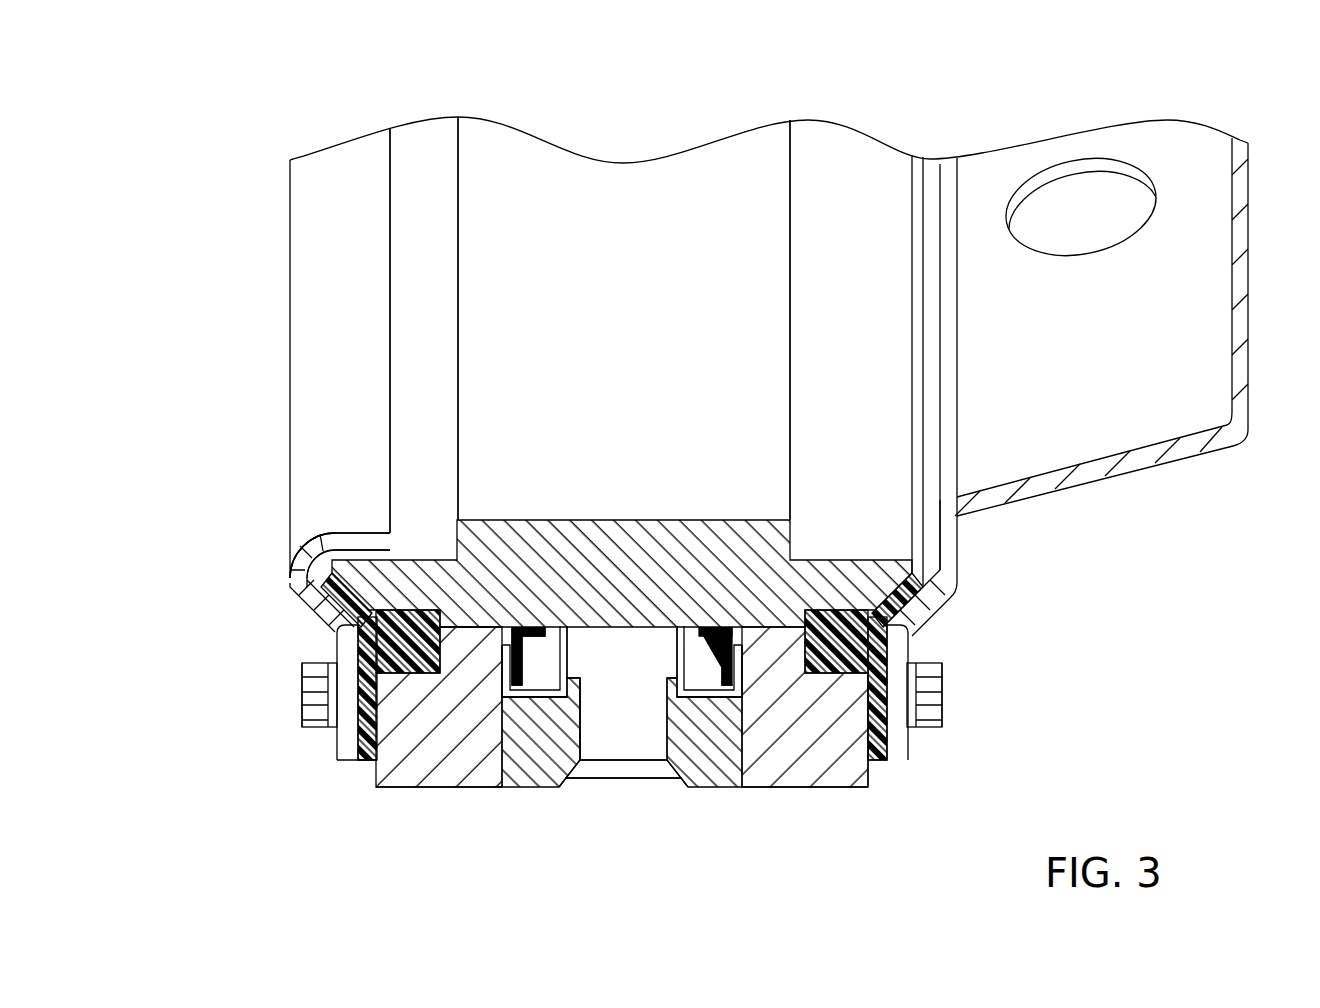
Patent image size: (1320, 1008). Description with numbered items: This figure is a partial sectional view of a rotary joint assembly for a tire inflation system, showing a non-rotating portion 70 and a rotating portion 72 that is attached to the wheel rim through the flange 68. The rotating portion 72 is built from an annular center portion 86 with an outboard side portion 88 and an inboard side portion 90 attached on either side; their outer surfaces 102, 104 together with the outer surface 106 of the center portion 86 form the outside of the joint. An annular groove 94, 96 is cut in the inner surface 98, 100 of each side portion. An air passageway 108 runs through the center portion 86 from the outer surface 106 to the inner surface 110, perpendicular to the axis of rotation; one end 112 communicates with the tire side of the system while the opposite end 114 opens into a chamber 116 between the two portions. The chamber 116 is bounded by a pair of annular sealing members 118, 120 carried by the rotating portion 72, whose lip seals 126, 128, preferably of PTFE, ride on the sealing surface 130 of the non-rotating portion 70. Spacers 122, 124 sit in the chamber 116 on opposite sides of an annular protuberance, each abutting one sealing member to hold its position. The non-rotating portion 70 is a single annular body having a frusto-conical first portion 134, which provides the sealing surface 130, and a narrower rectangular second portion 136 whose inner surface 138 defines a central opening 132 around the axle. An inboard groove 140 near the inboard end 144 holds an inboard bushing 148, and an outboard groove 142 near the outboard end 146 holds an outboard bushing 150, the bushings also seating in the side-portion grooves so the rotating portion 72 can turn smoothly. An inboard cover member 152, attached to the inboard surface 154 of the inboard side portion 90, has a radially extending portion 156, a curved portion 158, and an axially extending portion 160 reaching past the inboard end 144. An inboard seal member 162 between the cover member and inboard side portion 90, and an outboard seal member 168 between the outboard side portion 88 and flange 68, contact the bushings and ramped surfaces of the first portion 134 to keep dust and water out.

The flange 68 is at (1073, 492).
The non-rotating portion 70 is at (743, 537).
The rotating portion 72 is at (847, 777).
The center portion 86 is at (708, 787).
The outboard side portion 88 is at (803, 760).
The inboard side portion 90 is at (423, 760).
The annular groove 94 is at (348, 690).
The annular groove 96 is at (912, 692).
The inner surface 98 is at (350, 713).
The inner surface 100 is at (940, 735).
The outer surface 102 is at (395, 787).
The outer surface 104 is at (765, 787).
The outer surface 106 is at (512, 787).
The air passageway 108 is at (587, 750).
The inner surface 110 is at (613, 680).
The end 112 is at (642, 787).
The opposite end 114 is at (633, 678).
The chamber 116 is at (622, 660).
The annular sealing member 118 is at (737, 633).
The annular sealing member 120 is at (540, 693).
The spacer 122 is at (562, 628).
The spacer 124 is at (682, 630).
The lip seal 126 is at (515, 623).
The lip seal 128 is at (708, 632).
The sealing surface 130 is at (548, 620).
The central opening 132 is at (633, 192).
The first portion 134 is at (432, 568).
The second portion 136 is at (503, 537).
The inner surface 138 is at (693, 293).
The inboard groove 140 is at (307, 597).
The outboard groove 142 is at (912, 627).
The inboard end 144 is at (318, 533).
The outboard end 146 is at (950, 586).
The inboard bushing 148 is at (337, 617).
The outboard bushing 150 is at (890, 650).
The inboard cover member 152 is at (347, 733).
The inboard surface 154 is at (343, 757).
The radially extending portion 156 is at (350, 655).
The curved portion 158 is at (317, 538).
The axially extending portion 160 is at (350, 545).
The inboard seal member 162 is at (300, 570).
The outboard seal member 168 is at (915, 758).